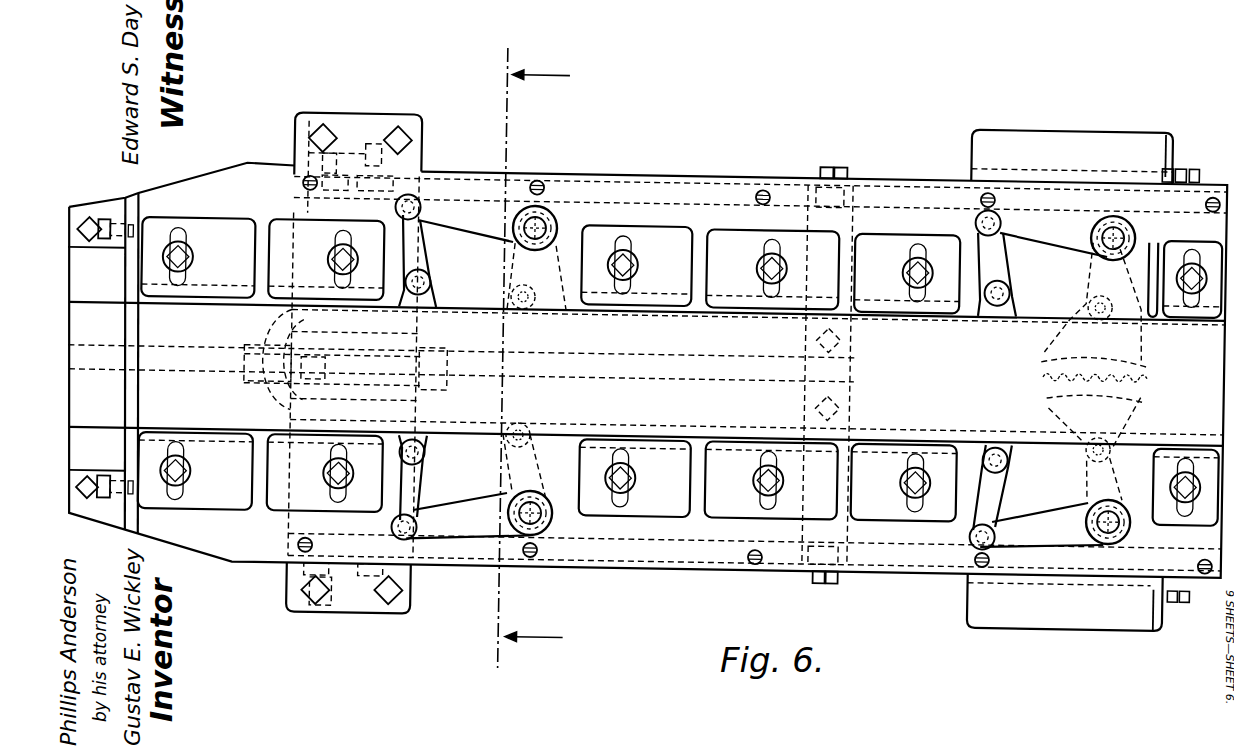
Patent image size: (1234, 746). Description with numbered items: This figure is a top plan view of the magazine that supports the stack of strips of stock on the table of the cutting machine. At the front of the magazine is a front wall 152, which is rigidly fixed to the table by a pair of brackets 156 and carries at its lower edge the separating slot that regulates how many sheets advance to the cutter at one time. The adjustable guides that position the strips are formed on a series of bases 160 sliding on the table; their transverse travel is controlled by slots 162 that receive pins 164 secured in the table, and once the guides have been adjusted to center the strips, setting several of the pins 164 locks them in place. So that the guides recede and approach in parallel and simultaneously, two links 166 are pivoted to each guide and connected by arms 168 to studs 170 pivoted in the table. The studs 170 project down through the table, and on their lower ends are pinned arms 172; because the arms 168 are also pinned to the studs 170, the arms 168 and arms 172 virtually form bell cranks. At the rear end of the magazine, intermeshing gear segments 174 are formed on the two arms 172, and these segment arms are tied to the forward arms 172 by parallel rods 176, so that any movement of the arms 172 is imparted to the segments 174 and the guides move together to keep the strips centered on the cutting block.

The front wall 152 is at (152, 315).
The brackets 156 is at (100, 246).
The bases 160 is at (677, 359).
The slots 162 is at (177, 225).
The pins 164 is at (200, 234).
The links 166 is at (427, 250).
The arms 168 is at (757, 381).
The studs 170 is at (543, 220).
The arms 172 is at (585, 318).
The gear segments 174 is at (1046, 382).
The parallel rods 176 is at (1042, 258).